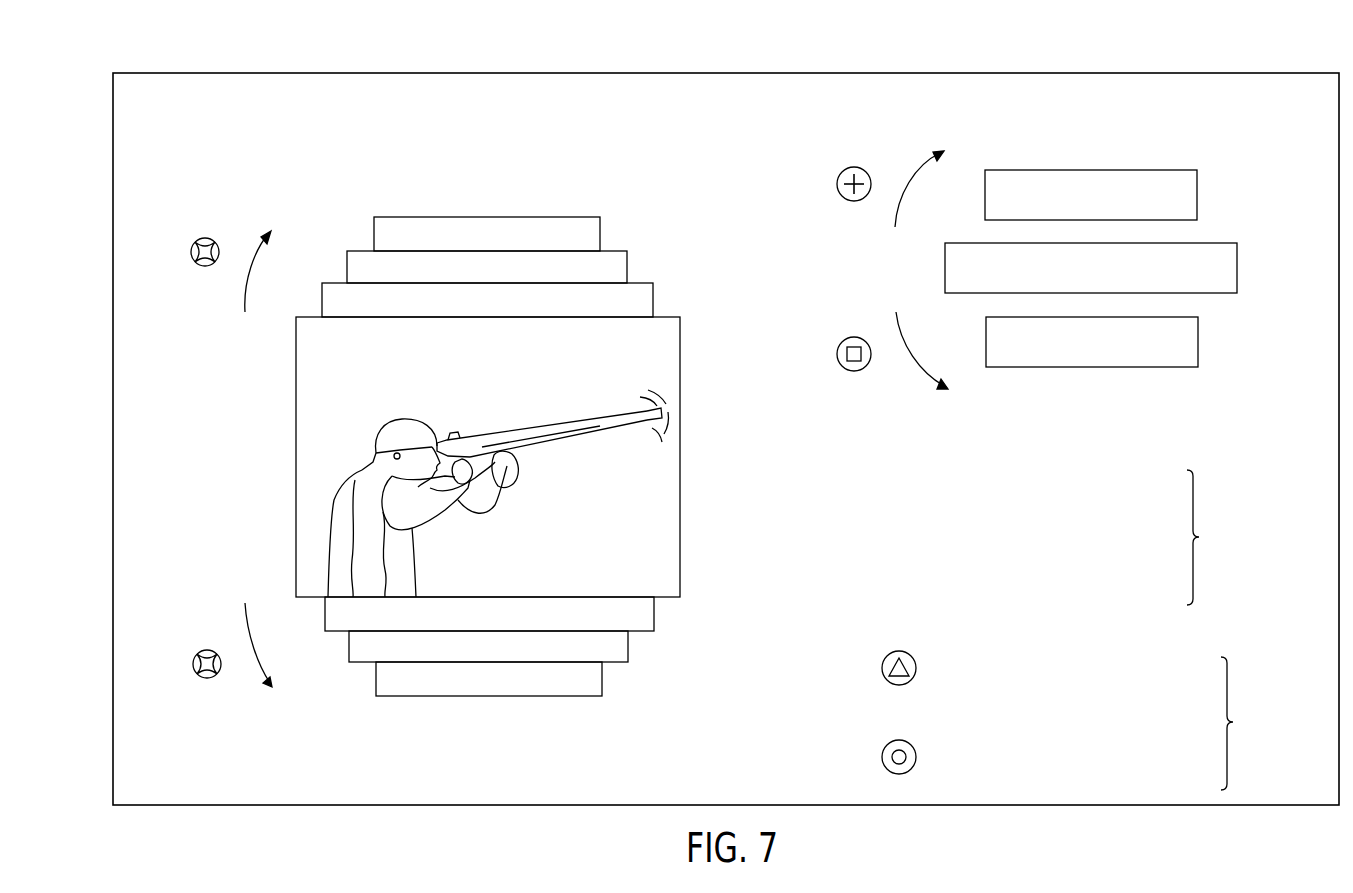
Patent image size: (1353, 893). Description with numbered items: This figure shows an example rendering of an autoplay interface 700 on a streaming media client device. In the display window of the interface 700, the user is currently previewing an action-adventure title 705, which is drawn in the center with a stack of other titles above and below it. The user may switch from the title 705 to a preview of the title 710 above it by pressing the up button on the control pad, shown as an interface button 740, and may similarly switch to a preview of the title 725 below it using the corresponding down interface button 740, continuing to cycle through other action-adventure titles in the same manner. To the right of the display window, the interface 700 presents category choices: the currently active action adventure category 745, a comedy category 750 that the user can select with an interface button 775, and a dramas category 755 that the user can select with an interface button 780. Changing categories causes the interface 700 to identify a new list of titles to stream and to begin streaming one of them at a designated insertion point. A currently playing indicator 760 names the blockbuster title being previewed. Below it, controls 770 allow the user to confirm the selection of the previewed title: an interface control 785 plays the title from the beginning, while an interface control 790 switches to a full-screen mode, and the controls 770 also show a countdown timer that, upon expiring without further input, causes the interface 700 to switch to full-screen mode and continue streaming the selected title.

The autoplay interface 700 is at (224, 44).
The action-adventure title 705 is at (680, 338).
The title 710 is at (653, 296).
The title 725 is at (653, 612).
The interface button 740 is at (197, 242).
The action adventure category button 745 is at (1237, 262).
The comedy category 750 is at (1197, 186).
The dramas category 755 is at (1198, 338).
The currently playing indicator 760 is at (1199, 537).
The controls 770 is at (1233, 722).
The interface button 775 is at (857, 166).
The interface button 780 is at (852, 372).
The interface control 785 is at (882, 660).
The interface control 790 is at (882, 757).